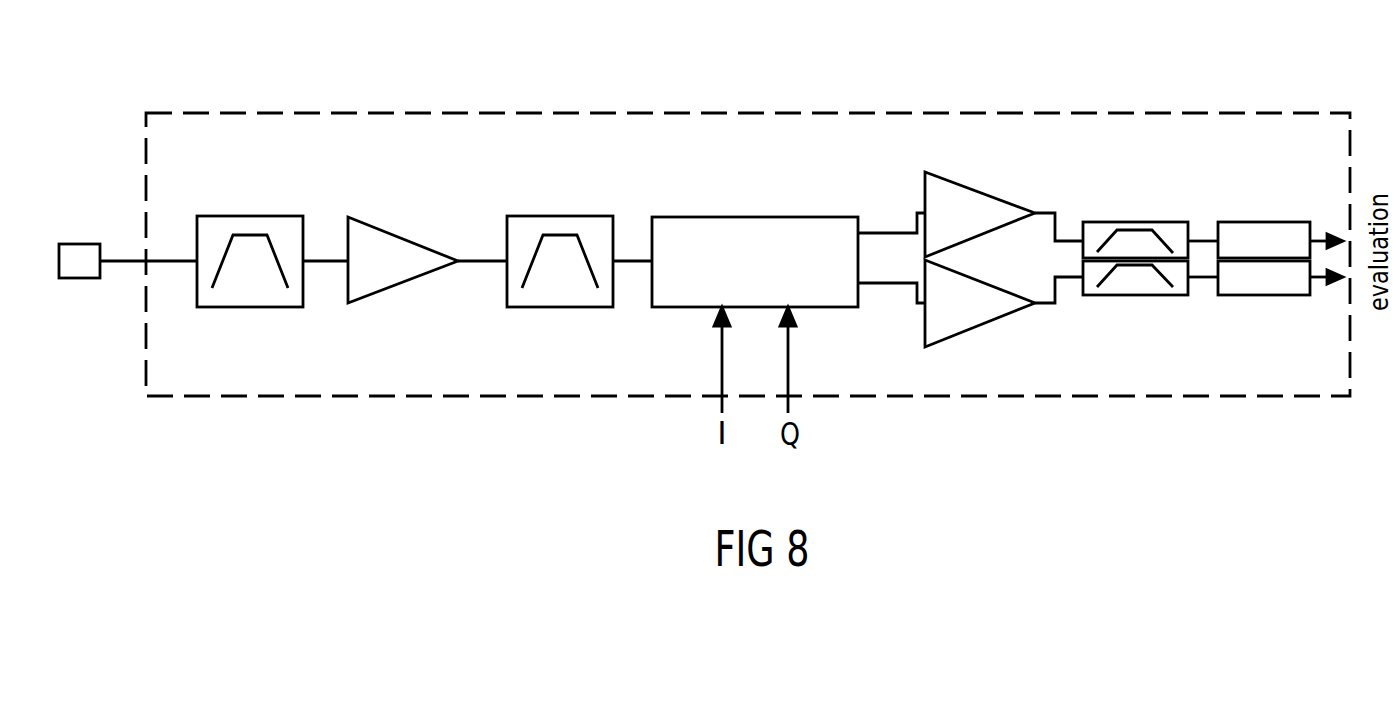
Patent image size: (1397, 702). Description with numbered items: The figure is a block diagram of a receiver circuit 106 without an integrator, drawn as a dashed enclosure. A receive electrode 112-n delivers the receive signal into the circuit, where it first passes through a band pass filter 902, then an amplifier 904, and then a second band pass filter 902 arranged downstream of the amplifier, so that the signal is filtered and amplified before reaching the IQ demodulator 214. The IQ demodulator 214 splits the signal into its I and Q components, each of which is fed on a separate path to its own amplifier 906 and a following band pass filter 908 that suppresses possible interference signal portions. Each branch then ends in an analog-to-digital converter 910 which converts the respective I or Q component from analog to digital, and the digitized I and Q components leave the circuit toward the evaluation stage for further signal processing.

The receiver circuit 106 is at (927, 112).
The receive electrode 112-n is at (85, 279).
The band pass filter 902 is at (287, 215).
The amplifier 904 is at (377, 228).
The IQ demodulator 214 is at (788, 216).
The amplifier 906 is at (955, 183).
The band pass filter 908 is at (1170, 221).
The analog-to-digital converter 910 is at (1283, 221).